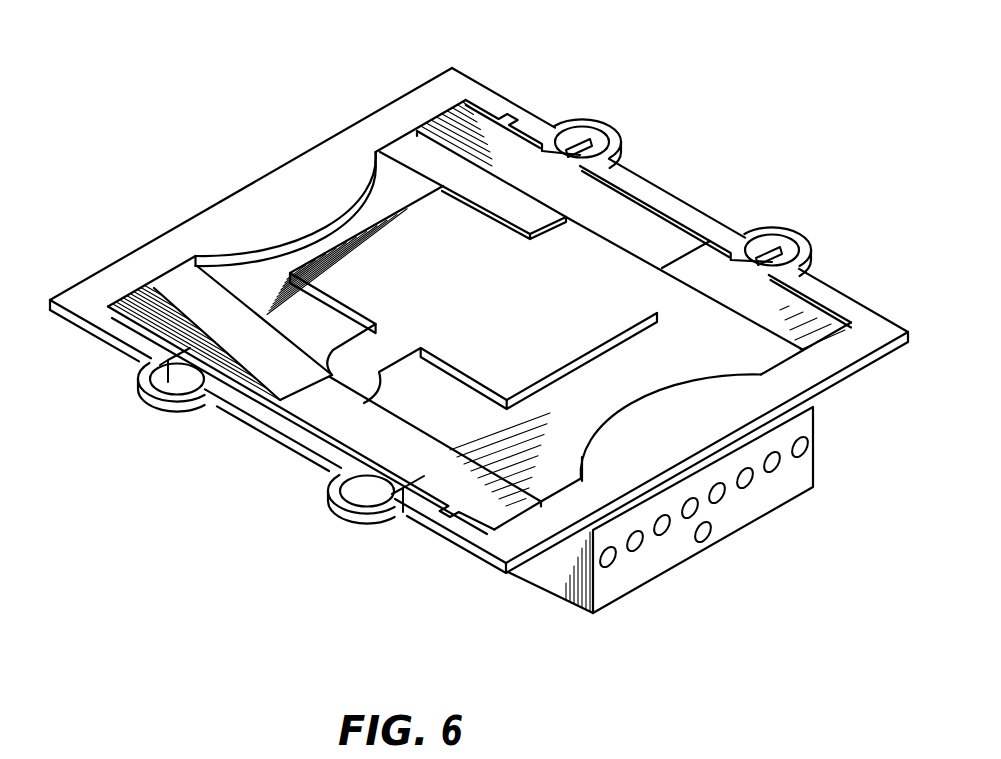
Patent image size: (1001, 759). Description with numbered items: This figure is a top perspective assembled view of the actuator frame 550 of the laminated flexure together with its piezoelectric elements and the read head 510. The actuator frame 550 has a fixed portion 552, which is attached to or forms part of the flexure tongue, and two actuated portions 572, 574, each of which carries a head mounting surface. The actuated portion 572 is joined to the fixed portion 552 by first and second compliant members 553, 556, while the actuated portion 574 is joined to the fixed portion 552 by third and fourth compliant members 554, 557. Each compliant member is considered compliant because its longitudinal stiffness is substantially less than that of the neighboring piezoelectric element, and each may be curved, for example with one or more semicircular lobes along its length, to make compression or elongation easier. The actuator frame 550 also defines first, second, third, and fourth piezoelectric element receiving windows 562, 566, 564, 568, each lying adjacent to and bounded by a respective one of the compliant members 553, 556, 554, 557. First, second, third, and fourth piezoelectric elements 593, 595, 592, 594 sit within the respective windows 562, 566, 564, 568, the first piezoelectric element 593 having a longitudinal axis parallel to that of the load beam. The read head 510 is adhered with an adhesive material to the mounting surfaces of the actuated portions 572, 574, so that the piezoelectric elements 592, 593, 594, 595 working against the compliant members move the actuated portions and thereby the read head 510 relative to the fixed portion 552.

The read head 510 is at (747, 508).
The actuator frame 550 is at (134, 212).
The fixed portion 552 is at (455, 298).
The first compliant member 553 is at (590, 118).
The third compliant member 554 is at (793, 237).
The second compliant member 556 is at (145, 395).
The fourth compliant member 557 is at (350, 515).
The first piezoelectric element receiving window 562 is at (577, 148).
The third piezoelectric element receiving window 564 is at (765, 260).
The second piezoelectric element receiving window 566 is at (175, 378).
The fourth piezoelectric element receiving window 568 is at (333, 484).
The actuated portion 572 is at (288, 214).
The actuated portion 574 is at (680, 420).
The third piezoelectric element 592 is at (773, 305).
The first piezoelectric element 593 is at (506, 143).
The fourth piezoelectric element 594 is at (447, 487).
The second piezoelectric element 595 is at (268, 378).